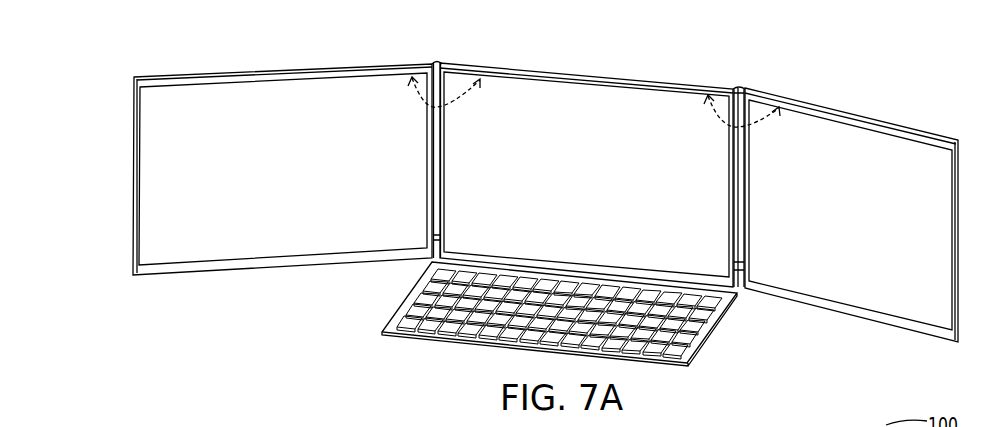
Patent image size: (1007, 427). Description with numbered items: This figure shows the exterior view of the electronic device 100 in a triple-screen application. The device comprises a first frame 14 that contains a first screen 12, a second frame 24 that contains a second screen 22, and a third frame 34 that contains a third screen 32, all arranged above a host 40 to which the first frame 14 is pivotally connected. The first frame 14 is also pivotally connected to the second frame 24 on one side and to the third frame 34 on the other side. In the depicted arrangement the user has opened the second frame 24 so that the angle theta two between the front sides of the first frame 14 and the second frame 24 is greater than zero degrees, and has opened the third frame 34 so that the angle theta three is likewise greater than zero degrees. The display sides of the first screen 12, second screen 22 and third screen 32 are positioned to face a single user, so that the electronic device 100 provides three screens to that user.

The electronic device 100 is at (881, 83).
The first screen 12 is at (576, 88).
The first frame 14 is at (519, 69).
The second screen 22 is at (930, 270).
The second frame 24 is at (957, 212).
The third screen 32 is at (157, 218).
The third frame 34 is at (135, 169).
The host 40 is at (668, 363).